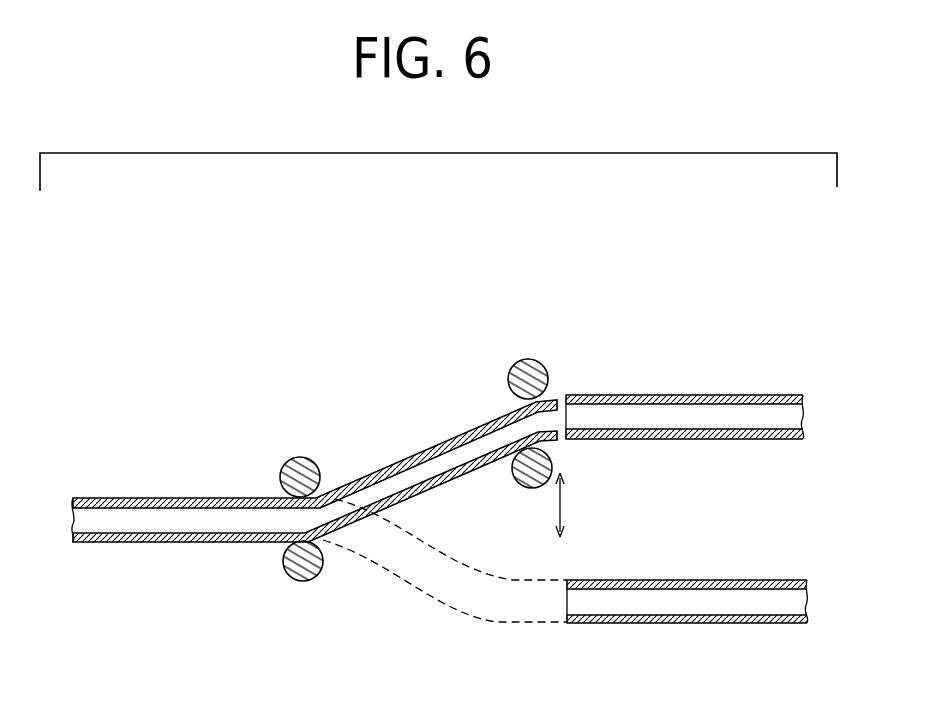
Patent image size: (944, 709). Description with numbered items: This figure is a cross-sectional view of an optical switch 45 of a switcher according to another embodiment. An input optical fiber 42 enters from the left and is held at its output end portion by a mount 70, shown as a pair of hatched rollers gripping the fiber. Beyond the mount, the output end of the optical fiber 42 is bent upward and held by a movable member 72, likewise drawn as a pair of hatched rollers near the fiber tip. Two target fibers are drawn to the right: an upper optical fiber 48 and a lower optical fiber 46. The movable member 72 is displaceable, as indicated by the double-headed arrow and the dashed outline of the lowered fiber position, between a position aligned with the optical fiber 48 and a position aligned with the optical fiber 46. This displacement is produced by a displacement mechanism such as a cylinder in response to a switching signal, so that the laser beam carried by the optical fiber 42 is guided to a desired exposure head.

The optical fiber 42 is at (92, 520).
The optical switch 45 is at (707, 416).
The optical fiber 46 is at (703, 603).
The optical fiber 48 is at (703, 420).
The mount 70 is at (303, 457).
The movable member 72 is at (524, 358).